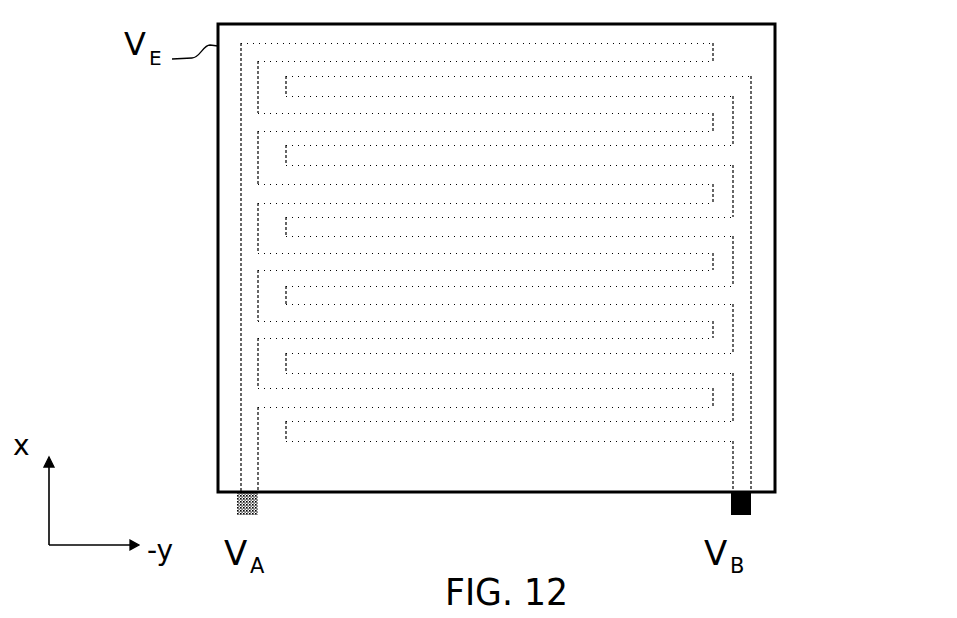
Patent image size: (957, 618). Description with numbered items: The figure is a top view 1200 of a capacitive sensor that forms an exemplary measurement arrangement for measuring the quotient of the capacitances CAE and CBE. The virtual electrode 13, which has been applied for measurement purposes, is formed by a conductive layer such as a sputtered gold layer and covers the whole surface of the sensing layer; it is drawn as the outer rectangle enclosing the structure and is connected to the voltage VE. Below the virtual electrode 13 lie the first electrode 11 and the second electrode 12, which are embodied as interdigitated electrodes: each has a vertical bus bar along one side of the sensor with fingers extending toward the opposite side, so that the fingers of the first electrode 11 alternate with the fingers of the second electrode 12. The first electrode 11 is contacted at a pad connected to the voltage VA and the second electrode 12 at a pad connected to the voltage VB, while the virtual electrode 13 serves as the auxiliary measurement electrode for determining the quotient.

The first electrode 11 is at (241, 190).
The second electrode 12 is at (747, 226).
The virtual electrode 13 is at (775, 40).
The top view 1200 is at (525, 297).